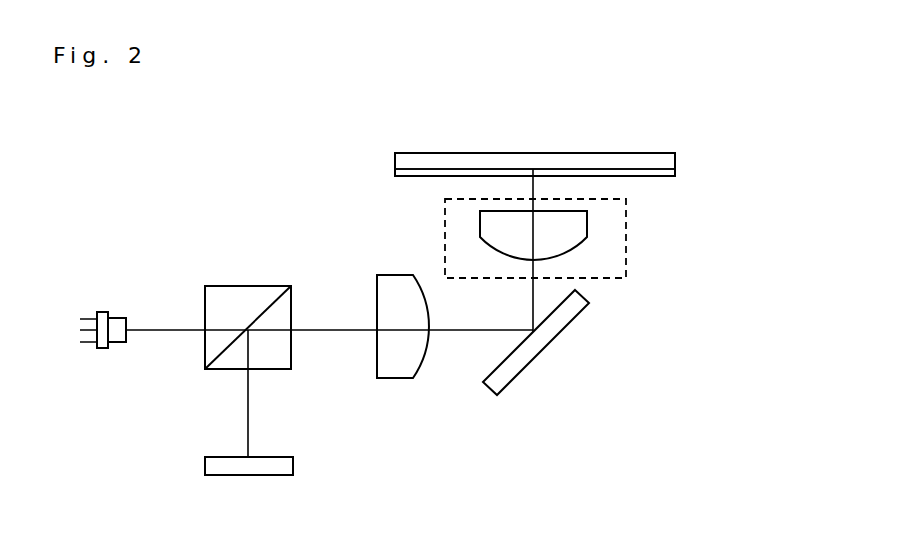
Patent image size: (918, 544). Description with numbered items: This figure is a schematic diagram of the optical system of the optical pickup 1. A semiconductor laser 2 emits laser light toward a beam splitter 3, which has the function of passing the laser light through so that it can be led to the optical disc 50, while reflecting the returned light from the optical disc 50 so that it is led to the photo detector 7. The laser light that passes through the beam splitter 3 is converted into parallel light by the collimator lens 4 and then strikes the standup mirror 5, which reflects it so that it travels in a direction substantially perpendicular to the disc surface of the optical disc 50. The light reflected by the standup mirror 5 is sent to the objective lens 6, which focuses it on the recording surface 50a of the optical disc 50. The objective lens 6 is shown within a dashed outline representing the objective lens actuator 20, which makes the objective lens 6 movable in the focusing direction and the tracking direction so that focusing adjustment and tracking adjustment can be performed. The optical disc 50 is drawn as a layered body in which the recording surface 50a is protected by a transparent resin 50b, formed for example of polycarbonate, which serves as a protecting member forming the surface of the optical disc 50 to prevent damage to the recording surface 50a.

The optical pickup 1 is at (237, 170).
The semiconductor laser 2 is at (108, 312).
The beam splitter 3 is at (245, 285).
The collimator lens 4 is at (402, 380).
The standup mirror 5 is at (537, 357).
The objective lens 6 is at (480, 226).
The photo detector 7 is at (247, 475).
The objective lens actuator 20 is at (627, 245).
The optical disc 50 is at (563, 152).
The recording surface 50a is at (625, 168).
The transparent resin 50b is at (673, 172).